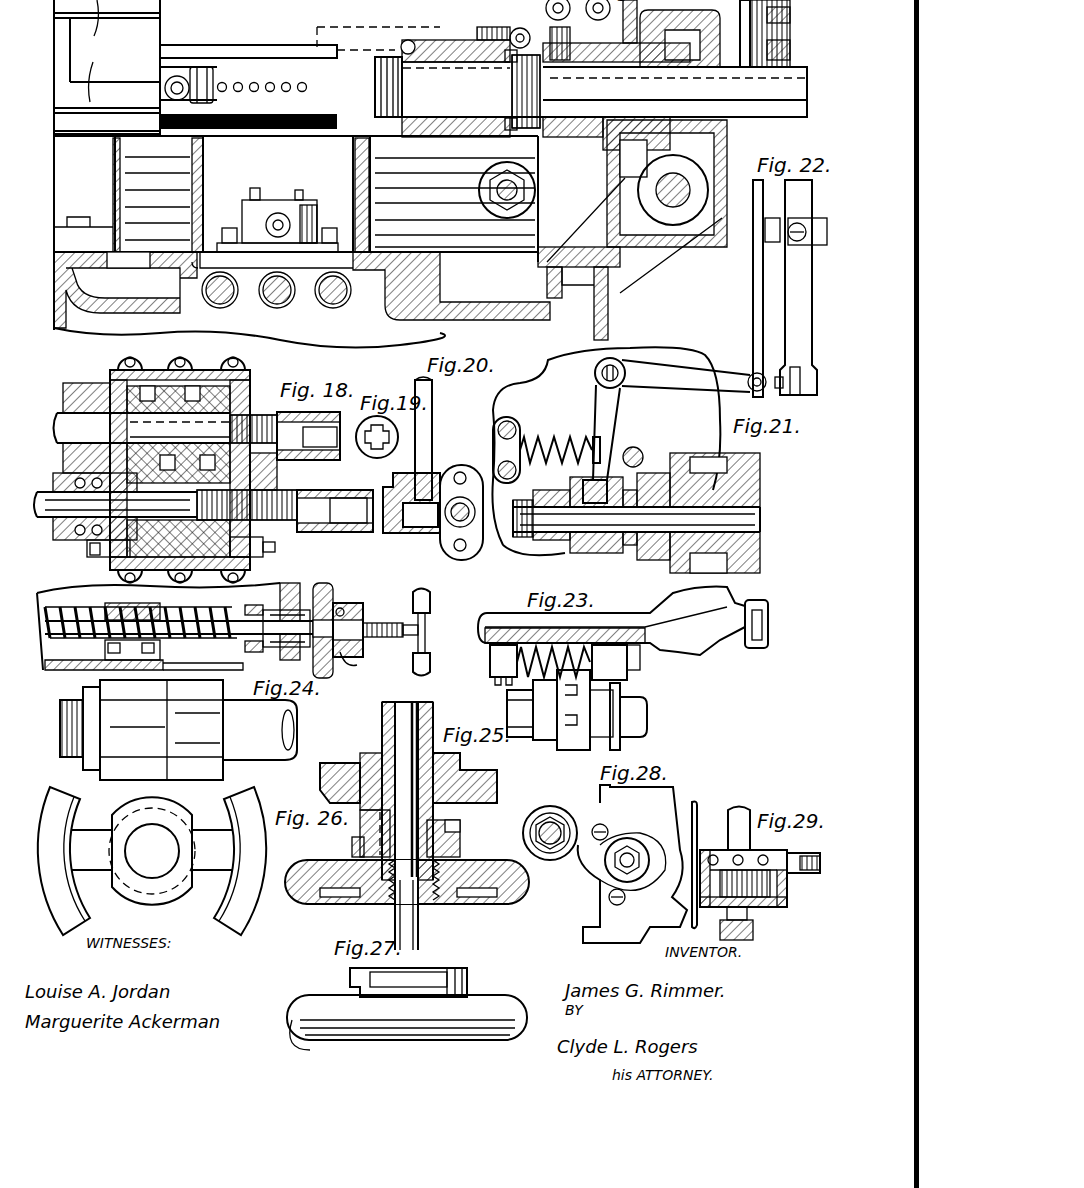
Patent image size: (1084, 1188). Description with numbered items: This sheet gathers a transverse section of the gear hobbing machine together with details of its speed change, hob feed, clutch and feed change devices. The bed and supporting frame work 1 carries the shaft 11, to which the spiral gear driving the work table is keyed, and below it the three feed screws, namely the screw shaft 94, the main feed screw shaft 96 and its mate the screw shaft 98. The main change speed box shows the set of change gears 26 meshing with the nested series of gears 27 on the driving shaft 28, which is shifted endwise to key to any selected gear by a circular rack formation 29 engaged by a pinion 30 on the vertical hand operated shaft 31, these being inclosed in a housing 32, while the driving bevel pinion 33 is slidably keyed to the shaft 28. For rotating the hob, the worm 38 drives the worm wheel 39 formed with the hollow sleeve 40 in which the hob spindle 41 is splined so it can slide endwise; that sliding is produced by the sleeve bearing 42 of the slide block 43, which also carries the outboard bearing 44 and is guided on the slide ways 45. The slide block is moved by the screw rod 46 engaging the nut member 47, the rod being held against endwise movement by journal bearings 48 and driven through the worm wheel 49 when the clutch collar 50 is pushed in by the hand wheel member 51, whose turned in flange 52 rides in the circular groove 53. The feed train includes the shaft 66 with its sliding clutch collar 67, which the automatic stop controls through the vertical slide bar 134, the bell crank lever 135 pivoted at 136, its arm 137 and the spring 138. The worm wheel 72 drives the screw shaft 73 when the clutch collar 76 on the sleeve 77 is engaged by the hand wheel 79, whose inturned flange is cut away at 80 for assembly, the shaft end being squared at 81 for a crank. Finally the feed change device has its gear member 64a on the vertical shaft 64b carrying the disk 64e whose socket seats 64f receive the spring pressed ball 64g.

In FIG. 6, the bed and supporting frame work 1 is at (438, 318).
In FIG. 6, the shaft 11 is at (630, 259).
In FIG. 18, the set of change gears 26 is at (153, 400).
In FIG. 18, the series of gears 27 is at (262, 545).
In FIG. 18, the driving shaft 28 is at (53, 503).
In FIG. 18, the circular rack formation 29 is at (283, 494).
In FIG. 20, the circular rack formation 29 is at (473, 527).
In FIG. 20, the pinion 30 is at (413, 530).
In FIG. 20, the hand operated shaft 31 is at (434, 420).
In FIG. 20, the housing 32 is at (443, 537).
In FIG. 18, the driving bevel pinion 33 is at (70, 545).
In FIG. 6, the worm 38 is at (598, 222).
In FIG. 6, the worm wheel 39 is at (733, 147).
In FIG. 6, the hollow sleeve 40 is at (615, 178).
In FIG. 6, the hob spindle 41 is at (580, 103).
In FIG. 6, the sleeve bearing 42 is at (455, 38).
In FIG. 6, the slide block 43 is at (175, 25).
In FIG. 24, the slide block 43 is at (167, 717).
In FIG. 6, the outboard bearing 44 is at (160, 68).
In FIG. 6, the slide ways 45 is at (107, 165).
In FIG. 24, the screw rod 46 is at (175, 623).
In FIG. 24, the nut member 47 is at (107, 602).
In FIG. 24, the journal bearings 48 is at (318, 590).
In FIG. 24, the worm wheel 49 is at (335, 667).
In FIG. 24, the clutch collar 50 is at (370, 610).
In FIG. 6, the hand wheel member 51 is at (787, 32).
In FIG. 24, the hand wheel member 51 is at (427, 667).
In FIG. 24, the turned in flange 52 is at (353, 603).
In FIG. 24, the circular groove 53 is at (360, 666).
In FIG. 29, the gear member 64a is at (760, 910).
In FIG. 29, the vertical shaft 64b is at (750, 814).
In FIG. 29, the disk 64e is at (720, 855).
In FIG. 29, the socket seats 64f is at (780, 890).
In FIG. 29, the spring pressed ball 64g is at (800, 851).
In FIG. 21, the shaft 66 is at (670, 523).
In FIG. 25, the shaft 66 is at (633, 707).
In FIG. 21, the sliding clutch collar 67 is at (587, 550).
In FIG. 25, the sliding clutch collar 67 is at (588, 750).
In FIG. 27, the worm wheel 72 is at (490, 788).
In FIG. 6, the screw shaft 73 is at (503, 195).
In FIG. 27, the screw shaft 73 is at (403, 723).
In FIG. 28, the screw shaft 73 is at (537, 832).
In FIG. 27, the clutch collar 76 is at (455, 838).
In FIG. 27, the sleeve 77 is at (362, 765).
In FIG. 26, the hand wheel 79 is at (253, 912).
In FIG. 27, the hand wheel 79 is at (422, 1030).
In FIG. 26, the cut away 80 is at (193, 828).
In FIG. 27, the cut away 80 is at (408, 982).
In FIG. 27, the squared end 81 is at (418, 922).
In FIG. 6, the screw shaft 94 is at (338, 308).
In FIG. 6, the main feed screw shaft 96 is at (282, 308).
In FIG. 6, the screw shaft 98 is at (225, 308).
In FIG. 22, the vertical slide bar 134 is at (752, 263).
In FIG. 21, the bell crank lever 135 is at (655, 383).
In FIG. 23, the bell crank lever 135 is at (707, 640).
In FIG. 21, the pivot 136 is at (595, 373).
In FIG. 21, the arm 137 is at (620, 447).
In FIG. 21, the spring 138 is at (567, 433).
In FIG. 23, the spring 138 is at (540, 670).